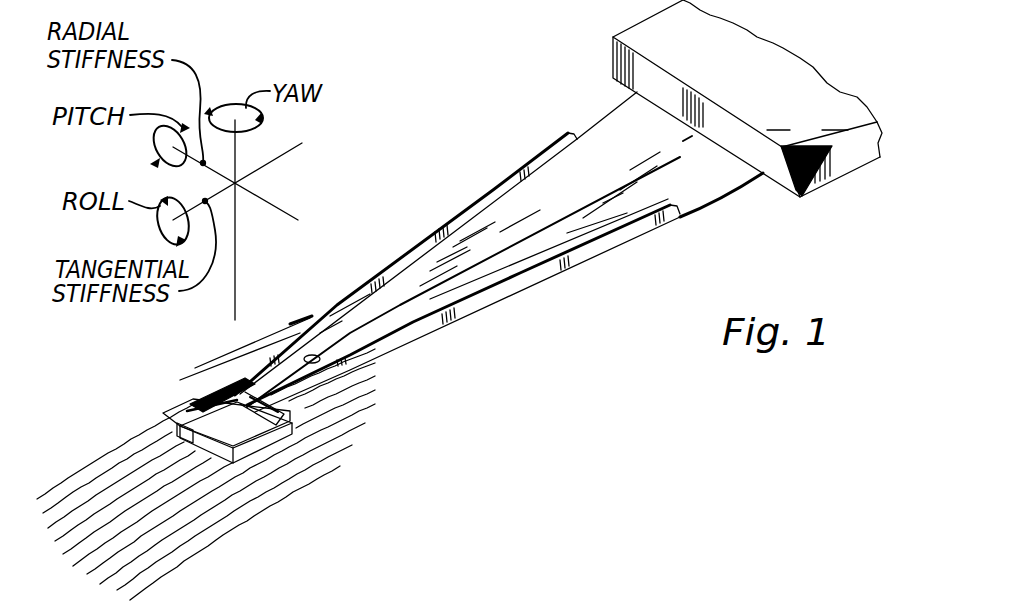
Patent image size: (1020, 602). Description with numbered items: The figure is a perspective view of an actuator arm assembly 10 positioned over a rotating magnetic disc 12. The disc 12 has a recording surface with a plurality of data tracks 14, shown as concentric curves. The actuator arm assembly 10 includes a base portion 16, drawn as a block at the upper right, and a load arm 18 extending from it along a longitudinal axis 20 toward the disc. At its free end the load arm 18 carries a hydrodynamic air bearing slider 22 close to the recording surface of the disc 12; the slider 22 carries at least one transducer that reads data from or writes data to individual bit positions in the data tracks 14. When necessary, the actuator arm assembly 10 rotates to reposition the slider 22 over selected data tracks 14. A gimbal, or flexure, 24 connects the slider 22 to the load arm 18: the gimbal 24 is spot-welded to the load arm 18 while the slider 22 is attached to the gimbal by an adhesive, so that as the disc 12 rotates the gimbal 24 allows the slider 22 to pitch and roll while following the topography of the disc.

The actuator arm assembly 10 is at (450, 403).
The disc 12 is at (128, 438).
The data tracks 14 is at (160, 497).
The base portion 16 is at (612, 57).
The load arm 18 is at (545, 185).
The longitudinal axis 20 is at (668, 153).
The hydrodynamic air bearing slider 22 is at (247, 448).
The gimbal (flexure) 24 is at (190, 395).